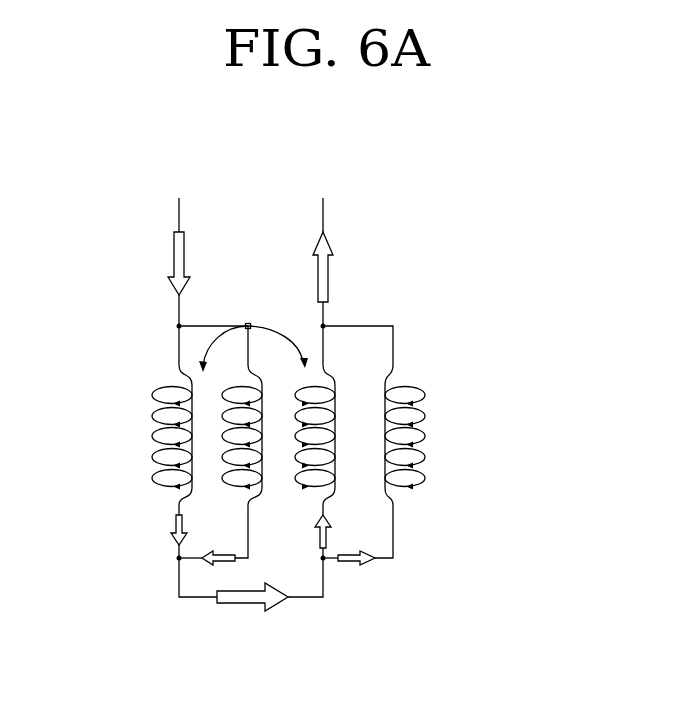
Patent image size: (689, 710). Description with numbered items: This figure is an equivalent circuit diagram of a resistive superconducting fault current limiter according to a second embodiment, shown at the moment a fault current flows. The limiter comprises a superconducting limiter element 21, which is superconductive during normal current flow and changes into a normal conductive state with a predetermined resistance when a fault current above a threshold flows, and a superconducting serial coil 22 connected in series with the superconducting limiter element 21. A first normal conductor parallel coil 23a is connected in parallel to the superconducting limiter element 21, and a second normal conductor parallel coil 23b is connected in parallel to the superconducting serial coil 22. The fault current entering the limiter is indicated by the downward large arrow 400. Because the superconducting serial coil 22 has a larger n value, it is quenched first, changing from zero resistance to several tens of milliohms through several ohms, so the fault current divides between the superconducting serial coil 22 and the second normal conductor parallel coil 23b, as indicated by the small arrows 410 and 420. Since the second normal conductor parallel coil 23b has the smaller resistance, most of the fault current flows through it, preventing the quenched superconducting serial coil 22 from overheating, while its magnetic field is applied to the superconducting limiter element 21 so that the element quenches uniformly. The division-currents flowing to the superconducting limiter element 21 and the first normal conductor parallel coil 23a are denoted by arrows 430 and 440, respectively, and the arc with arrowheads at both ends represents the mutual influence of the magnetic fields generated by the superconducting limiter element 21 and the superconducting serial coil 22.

The superconducting limiter element 21 is at (337, 400).
The superconducting serial coil 22 is at (155, 435).
The first normal conductor parallel coil 23a is at (427, 432).
The second normal conductor parallel coil 23b is at (233, 398).
The downward large arrow 400 is at (317, 275).
The small arrow 410 is at (173, 522).
The small arrow 420 is at (202, 562).
The division-current 430 is at (327, 537).
The division-current 440 is at (350, 565).